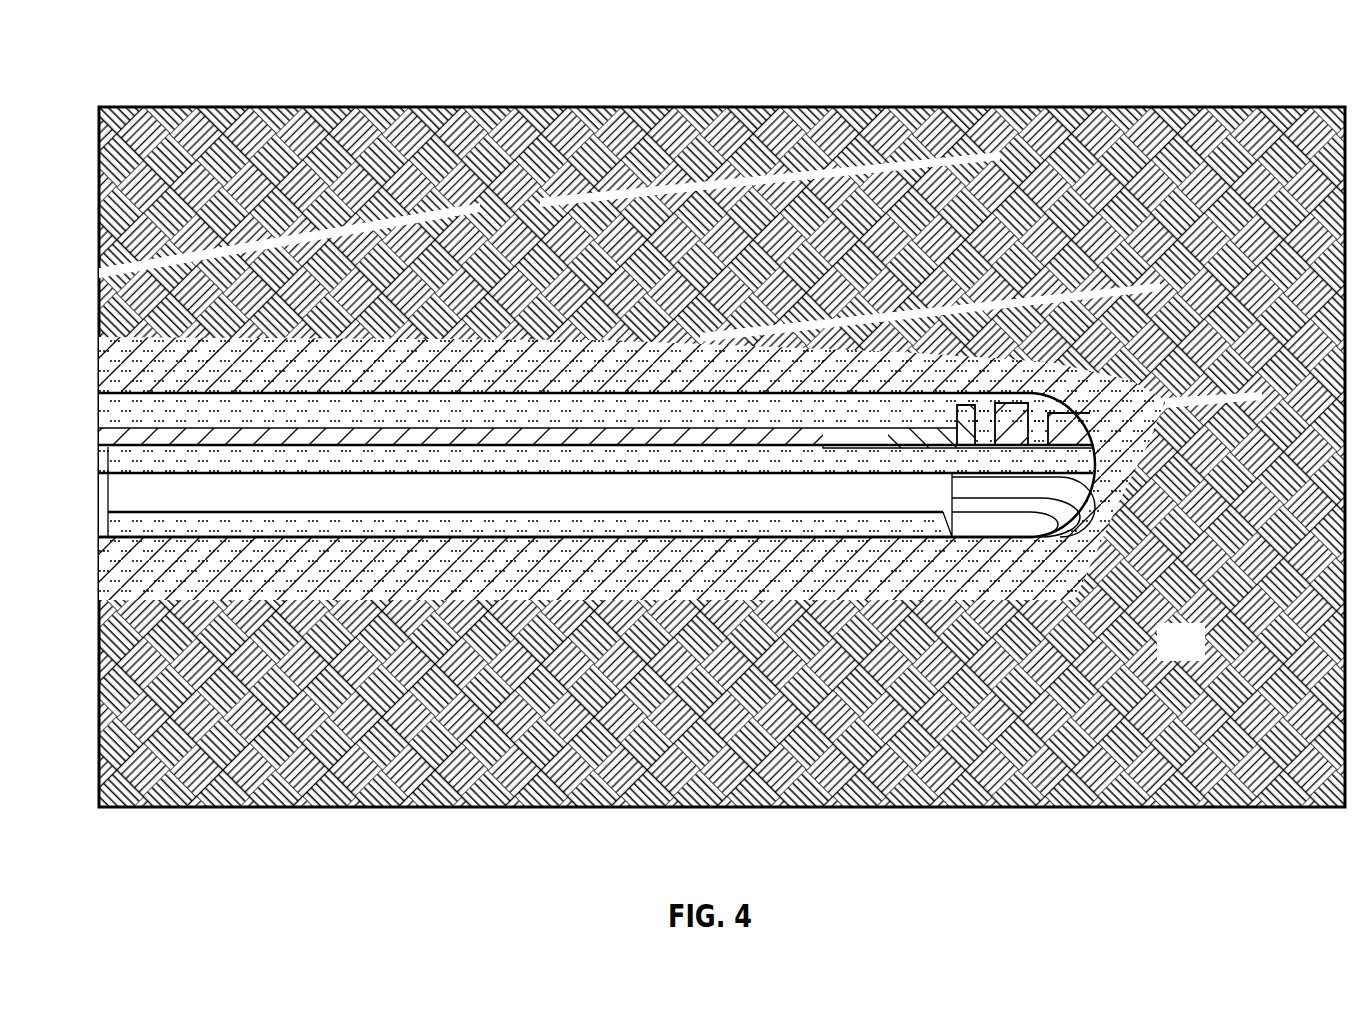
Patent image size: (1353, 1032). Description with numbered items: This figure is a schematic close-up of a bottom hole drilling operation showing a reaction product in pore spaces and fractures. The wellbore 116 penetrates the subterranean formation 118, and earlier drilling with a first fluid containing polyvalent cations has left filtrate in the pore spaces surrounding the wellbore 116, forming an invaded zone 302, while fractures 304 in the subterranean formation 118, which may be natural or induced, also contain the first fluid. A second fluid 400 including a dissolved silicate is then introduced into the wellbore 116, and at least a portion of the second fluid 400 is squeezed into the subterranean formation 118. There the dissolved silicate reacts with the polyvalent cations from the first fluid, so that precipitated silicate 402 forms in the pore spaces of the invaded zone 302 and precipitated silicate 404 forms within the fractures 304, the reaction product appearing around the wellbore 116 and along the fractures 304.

The wellbore 116 is at (885, 542).
The subterranean formation 118 is at (1203, 657).
The invaded zone 302 is at (383, 358).
The fractures 304 is at (1165, 285).
The second fluid 400 is at (188, 405).
The precipitated silicate 402 is at (508, 360).
The precipitated silicate 404 is at (1197, 407).